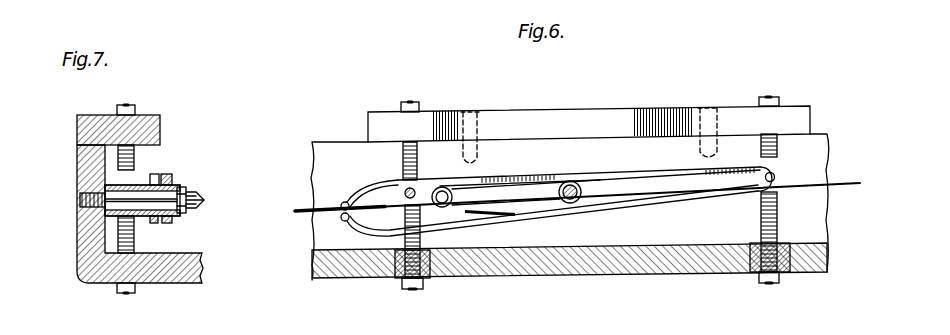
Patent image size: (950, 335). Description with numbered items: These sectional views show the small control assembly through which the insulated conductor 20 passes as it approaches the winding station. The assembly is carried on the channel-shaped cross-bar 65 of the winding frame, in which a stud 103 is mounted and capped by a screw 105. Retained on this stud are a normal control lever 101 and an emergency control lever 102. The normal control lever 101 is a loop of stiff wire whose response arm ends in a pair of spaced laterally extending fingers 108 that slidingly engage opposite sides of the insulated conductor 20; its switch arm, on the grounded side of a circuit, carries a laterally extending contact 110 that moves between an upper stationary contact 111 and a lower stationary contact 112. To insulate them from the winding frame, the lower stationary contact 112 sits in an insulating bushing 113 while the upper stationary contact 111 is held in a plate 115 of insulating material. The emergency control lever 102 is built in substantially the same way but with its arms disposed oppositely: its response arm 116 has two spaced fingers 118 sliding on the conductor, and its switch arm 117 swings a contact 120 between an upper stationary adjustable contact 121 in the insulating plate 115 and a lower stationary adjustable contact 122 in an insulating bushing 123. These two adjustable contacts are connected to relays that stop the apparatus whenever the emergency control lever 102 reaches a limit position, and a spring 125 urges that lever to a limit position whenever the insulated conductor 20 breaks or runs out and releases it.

In FIG. 7, the insulated conductor 20 is at (184, 211).
In FIG. 6, the insulated conductor 20 is at (564, 198).
In FIG. 7, the channel-shaped cross-bar 65 is at (200, 273).
In FIG. 6, the channel-shaped cross-bar 65 is at (637, 268).
In FIG. 7, the normal control lever 101 is at (175, 180).
In FIG. 7, the emergency control lever 102 is at (157, 175).
In FIG. 6, the emergency control lever 102 is at (547, 175).
In FIG. 7, the stud 103 is at (115, 200).
In FIG. 6, the stud 103 is at (571, 204).
In FIG. 7, the screw 105 is at (181, 214).
In FIG. 7, the fingers 108 is at (203, 204).
In FIG. 6, the contact 110 is at (407, 190).
In FIG. 6, the upper stationary contact 111 is at (419, 155).
In FIG. 6, the lower stationary contact 112 is at (423, 238).
In FIG. 6, the insulating bushing 113 is at (400, 280).
In FIG. 7, the plate of insulating material 115 is at (160, 125).
In FIG. 6, the plate of insulating material 115 is at (612, 118).
In FIG. 6, the response arm 116 is at (500, 168).
In FIG. 6, the switch arm 117 is at (660, 168).
In FIG. 6, the fingers 118 is at (340, 203).
In FIG. 7, the contact 120 is at (112, 185).
In FIG. 6, the contact 120 is at (752, 168).
In FIG. 7, the upper stationary adjustable contact 121 is at (118, 153).
In FIG. 6, the upper stationary adjustable contact 121 is at (780, 140).
In FIG. 7, the lower stationary adjustable contact 122 is at (120, 237).
In FIG. 6, the lower stationary adjustable contact 122 is at (757, 222).
In FIG. 6, the insulating bushing 123 is at (786, 275).
In FIG. 6, the spring 125 is at (483, 213).